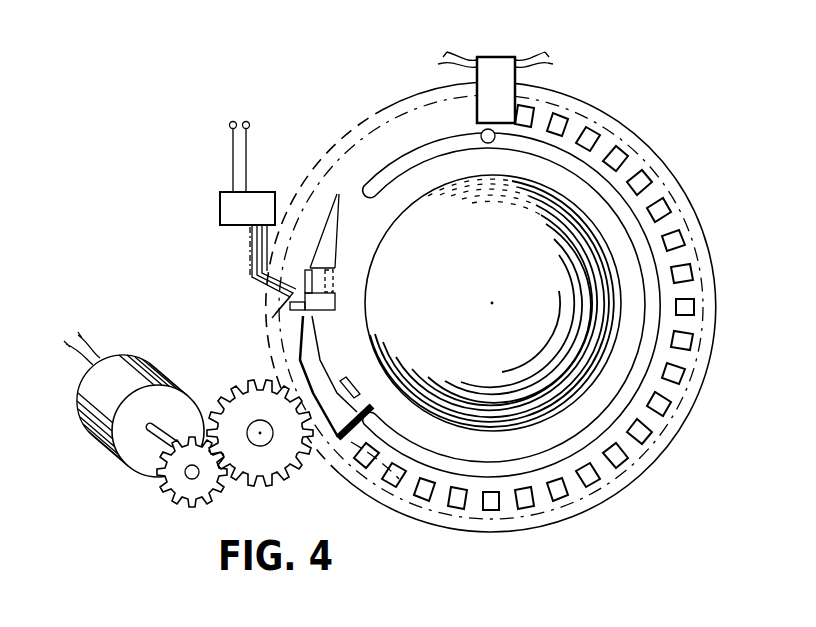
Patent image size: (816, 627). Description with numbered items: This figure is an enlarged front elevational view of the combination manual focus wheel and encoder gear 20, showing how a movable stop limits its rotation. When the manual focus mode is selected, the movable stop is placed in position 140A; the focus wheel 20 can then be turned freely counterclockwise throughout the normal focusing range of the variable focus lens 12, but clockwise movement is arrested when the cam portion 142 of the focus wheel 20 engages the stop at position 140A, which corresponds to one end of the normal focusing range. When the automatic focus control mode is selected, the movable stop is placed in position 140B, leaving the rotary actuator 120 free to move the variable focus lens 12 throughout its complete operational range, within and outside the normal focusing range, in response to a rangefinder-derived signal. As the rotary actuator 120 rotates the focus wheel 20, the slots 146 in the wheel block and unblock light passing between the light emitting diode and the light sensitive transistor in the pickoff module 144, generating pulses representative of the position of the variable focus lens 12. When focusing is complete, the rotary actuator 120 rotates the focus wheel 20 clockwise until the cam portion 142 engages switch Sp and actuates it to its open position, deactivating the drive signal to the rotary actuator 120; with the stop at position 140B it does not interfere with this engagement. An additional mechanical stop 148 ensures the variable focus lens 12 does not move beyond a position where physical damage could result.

The variable focus lens 12 is at (572, 302).
The manual focus wheel 20 is at (634, 157).
The rotary actuator 120 is at (125, 373).
The position of movable stop 140A is at (353, 380).
The position of movable stop 140B is at (333, 270).
The cam portion 142 is at (308, 360).
The pickoff module 144 is at (502, 70).
The slots 146 is at (566, 116).
The mechanical stop 148 is at (488, 143).
The switch Sp is at (229, 254).